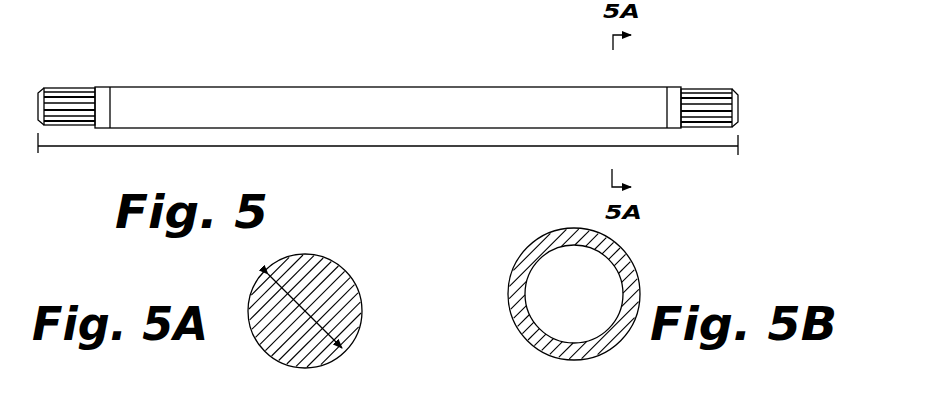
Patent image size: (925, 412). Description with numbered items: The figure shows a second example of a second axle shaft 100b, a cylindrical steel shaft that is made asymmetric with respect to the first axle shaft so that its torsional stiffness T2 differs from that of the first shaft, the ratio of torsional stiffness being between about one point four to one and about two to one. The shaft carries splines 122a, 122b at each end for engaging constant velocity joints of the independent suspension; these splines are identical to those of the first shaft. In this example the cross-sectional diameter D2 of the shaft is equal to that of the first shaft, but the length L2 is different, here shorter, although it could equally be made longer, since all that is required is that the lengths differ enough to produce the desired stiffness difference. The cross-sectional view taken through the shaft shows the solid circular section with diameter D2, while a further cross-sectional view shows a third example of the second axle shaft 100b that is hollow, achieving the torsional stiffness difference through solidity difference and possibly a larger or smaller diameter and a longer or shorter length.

In FIG. 5, the second axle shaft 100b is at (320, 87).
In FIG. 5A, the second axle shaft 100b is at (345, 348).
In FIG. 5B, the second axle shaft 100b is at (637, 265).
In FIG. 5, the spline 122a is at (67, 88).
In FIG. 5, the spline 122b is at (718, 89).
In FIG. 5, the length L2 is at (475, 146).
In FIG. 5, the torsional stiffness T2 is at (484, 72).
In FIG. 5A, the cross-sectional diameter D2 is at (326, 290).